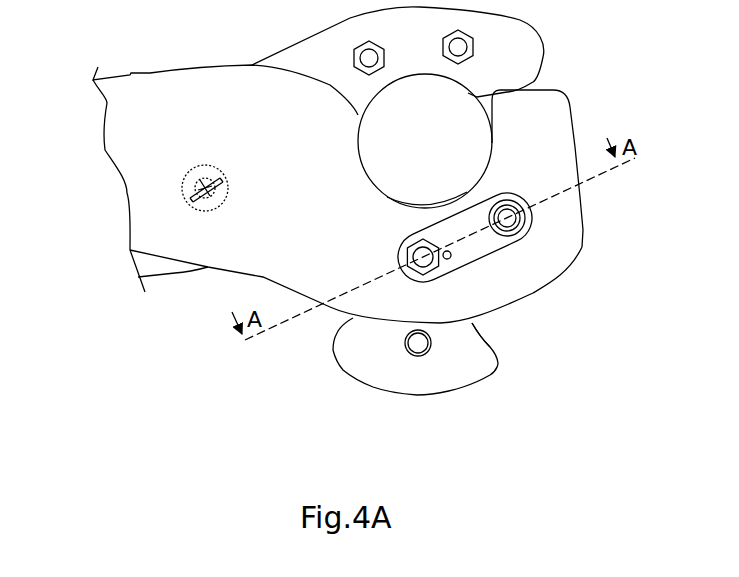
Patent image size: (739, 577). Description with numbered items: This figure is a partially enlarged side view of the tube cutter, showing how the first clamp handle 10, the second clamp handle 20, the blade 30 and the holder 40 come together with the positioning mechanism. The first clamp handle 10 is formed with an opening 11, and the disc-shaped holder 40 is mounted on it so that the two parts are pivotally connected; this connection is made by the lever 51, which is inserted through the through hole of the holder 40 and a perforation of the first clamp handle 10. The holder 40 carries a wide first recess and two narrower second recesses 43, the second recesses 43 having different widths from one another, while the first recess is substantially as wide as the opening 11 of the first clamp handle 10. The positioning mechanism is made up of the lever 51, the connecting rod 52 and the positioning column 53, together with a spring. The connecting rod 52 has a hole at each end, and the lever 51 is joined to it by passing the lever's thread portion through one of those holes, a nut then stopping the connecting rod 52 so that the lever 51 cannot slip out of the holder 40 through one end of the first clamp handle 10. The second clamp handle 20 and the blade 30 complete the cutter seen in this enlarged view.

The first clamp handle 10 is at (127, 122).
The opening 11 is at (453, 87).
The second clamp handle 20 is at (175, 273).
The blade 30 is at (458, 133).
The holder 40 is at (357, 363).
The second recess 43 is at (504, 345).
The lever 51 is at (423, 257).
The connecting rod 52 is at (473, 247).
The positioning column 53 is at (508, 227).